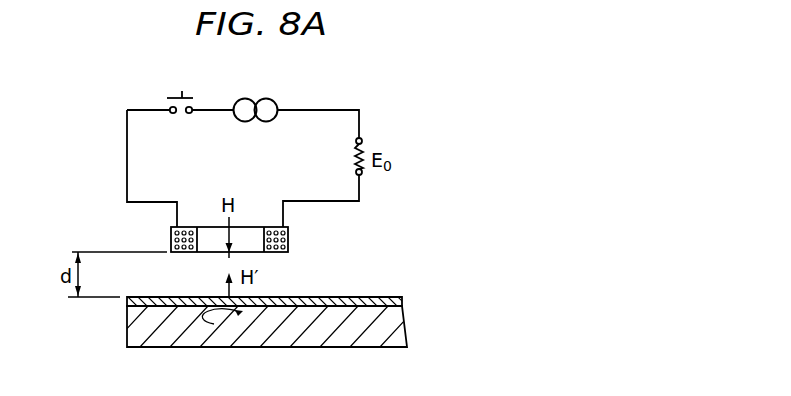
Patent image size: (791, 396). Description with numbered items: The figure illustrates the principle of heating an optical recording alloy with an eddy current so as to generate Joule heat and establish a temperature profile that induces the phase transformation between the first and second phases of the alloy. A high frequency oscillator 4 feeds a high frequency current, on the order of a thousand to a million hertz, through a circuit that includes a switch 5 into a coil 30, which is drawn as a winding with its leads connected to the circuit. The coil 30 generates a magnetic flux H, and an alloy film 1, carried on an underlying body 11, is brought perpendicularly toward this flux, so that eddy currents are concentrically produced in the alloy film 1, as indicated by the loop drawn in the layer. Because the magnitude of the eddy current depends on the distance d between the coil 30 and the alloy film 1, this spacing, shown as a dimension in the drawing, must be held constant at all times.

The alloy film 1 is at (403, 300).
The substrate 11 is at (405, 327).
The coil 30 is at (289, 238).
The high frequency oscillator 4 is at (258, 96).
The switch 5 is at (187, 92).